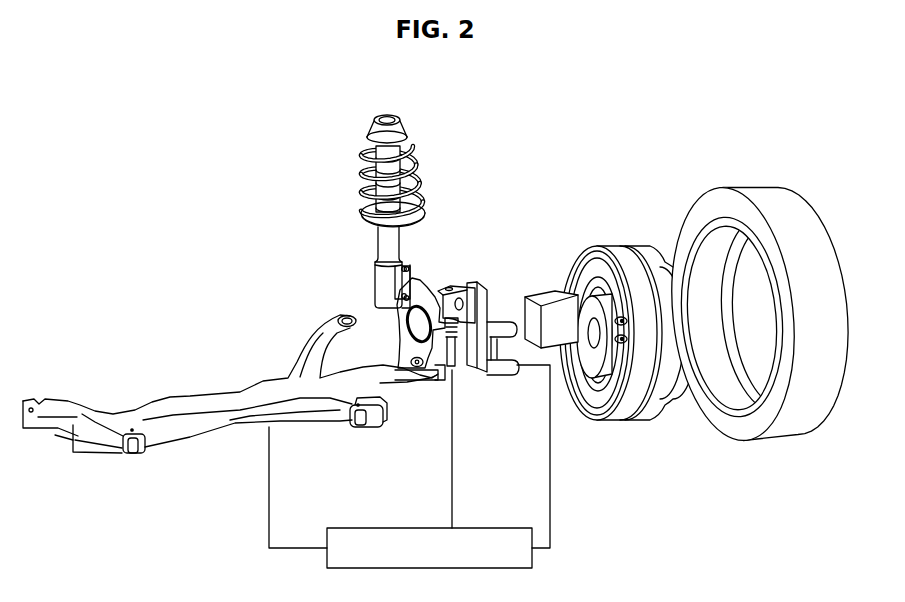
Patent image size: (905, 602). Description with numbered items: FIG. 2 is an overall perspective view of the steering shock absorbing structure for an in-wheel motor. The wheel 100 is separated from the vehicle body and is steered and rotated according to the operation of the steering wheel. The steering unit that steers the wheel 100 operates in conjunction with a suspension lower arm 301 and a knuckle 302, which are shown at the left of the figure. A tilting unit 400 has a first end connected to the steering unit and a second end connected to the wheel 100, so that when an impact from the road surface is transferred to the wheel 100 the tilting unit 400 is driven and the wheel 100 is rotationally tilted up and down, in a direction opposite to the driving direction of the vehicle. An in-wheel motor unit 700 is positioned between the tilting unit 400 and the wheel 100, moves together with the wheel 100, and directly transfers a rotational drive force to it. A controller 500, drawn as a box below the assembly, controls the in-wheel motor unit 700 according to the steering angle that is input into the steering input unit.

The wheel 100 is at (748, 197).
The suspension lower arm 301 is at (268, 385).
The knuckle 302 is at (442, 366).
The tilting unit 400 is at (492, 376).
The controller 500 is at (368, 528).
The in-wheel motor unit 700 is at (557, 282).